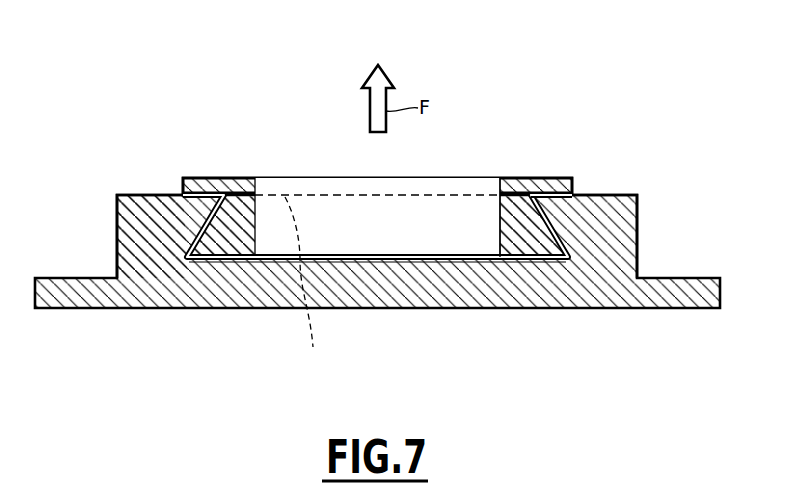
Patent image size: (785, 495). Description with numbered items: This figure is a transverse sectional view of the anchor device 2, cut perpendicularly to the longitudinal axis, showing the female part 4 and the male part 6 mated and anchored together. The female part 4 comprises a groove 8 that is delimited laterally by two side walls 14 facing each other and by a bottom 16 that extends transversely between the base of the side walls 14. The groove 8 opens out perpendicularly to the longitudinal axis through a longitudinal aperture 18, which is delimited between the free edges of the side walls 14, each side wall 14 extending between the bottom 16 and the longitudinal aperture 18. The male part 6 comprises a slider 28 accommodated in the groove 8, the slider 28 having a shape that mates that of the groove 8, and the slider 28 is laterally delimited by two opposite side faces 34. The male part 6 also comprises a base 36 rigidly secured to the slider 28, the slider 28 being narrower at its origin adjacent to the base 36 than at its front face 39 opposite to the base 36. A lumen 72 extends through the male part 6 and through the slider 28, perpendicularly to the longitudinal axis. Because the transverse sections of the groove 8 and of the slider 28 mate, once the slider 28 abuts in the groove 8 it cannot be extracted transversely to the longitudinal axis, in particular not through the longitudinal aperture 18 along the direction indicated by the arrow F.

The anchor device 2 is at (500, 104).
The female part 4 is at (106, 317).
The male part 6 is at (293, 158).
The groove 8 is at (176, 268).
The side walls 14 is at (207, 243).
The bottom 16 is at (401, 260).
The longitudinal aperture 18 is at (309, 285).
The slider 28 is at (488, 236).
The side faces 34 is at (207, 243).
The base 36 is at (542, 192).
The front face 39 is at (230, 262).
The lumen 72 is at (337, 231).